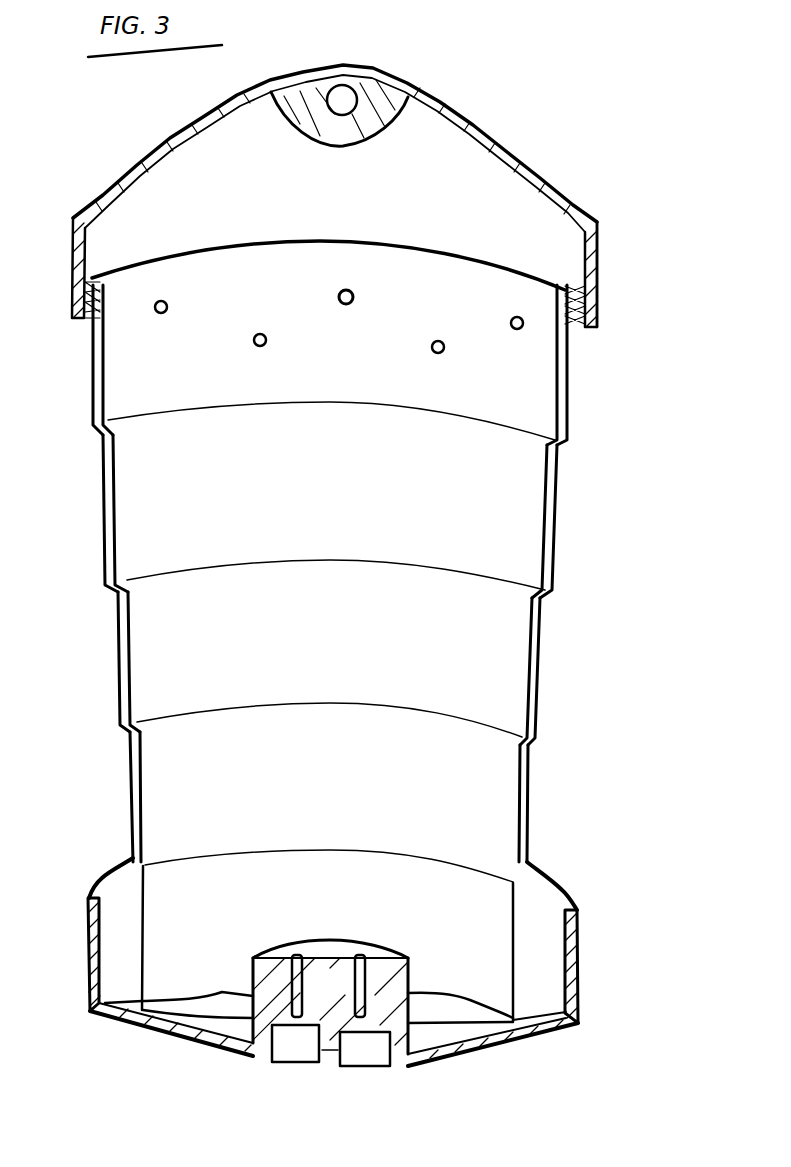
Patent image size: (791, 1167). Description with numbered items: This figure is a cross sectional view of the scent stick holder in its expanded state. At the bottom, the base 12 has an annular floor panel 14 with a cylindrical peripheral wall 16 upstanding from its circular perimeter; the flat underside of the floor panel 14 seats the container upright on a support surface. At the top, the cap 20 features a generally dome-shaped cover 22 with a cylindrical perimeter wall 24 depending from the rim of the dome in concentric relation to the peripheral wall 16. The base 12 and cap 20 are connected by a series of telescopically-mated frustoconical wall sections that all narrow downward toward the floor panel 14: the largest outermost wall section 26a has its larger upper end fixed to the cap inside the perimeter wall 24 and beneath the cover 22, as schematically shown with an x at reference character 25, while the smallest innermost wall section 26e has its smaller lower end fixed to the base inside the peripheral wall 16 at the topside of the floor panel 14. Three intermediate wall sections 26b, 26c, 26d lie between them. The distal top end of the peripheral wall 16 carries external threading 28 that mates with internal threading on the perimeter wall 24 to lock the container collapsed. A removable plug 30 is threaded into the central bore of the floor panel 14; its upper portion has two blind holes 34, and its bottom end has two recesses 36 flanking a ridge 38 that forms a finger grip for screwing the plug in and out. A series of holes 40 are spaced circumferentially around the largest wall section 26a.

The base 12 is at (594, 913).
The floor panel 14 is at (528, 1017).
The peripheral wall 16 is at (572, 974).
The cap 20 is at (523, 155).
The cover 22 is at (464, 112).
The perimeter wall 24 is at (598, 245).
The fixing location 25 is at (86, 296).
The largest outermost frustoconical wall section 26a is at (543, 392).
The intermediate frustoconical wall section 26b is at (525, 550).
The intermediate frustoconical wall section 26c is at (510, 686).
The intermediate frustoconical wall section 26d is at (500, 812).
The smallest innermost frustoconical wall section 26e is at (494, 985).
The external threading 28 is at (92, 892).
The removable plug 30 is at (401, 944).
The blind holes 34 is at (298, 958).
The recesses 36 is at (290, 1045).
The ridge 38 is at (328, 1052).
The holes 40 is at (165, 313).